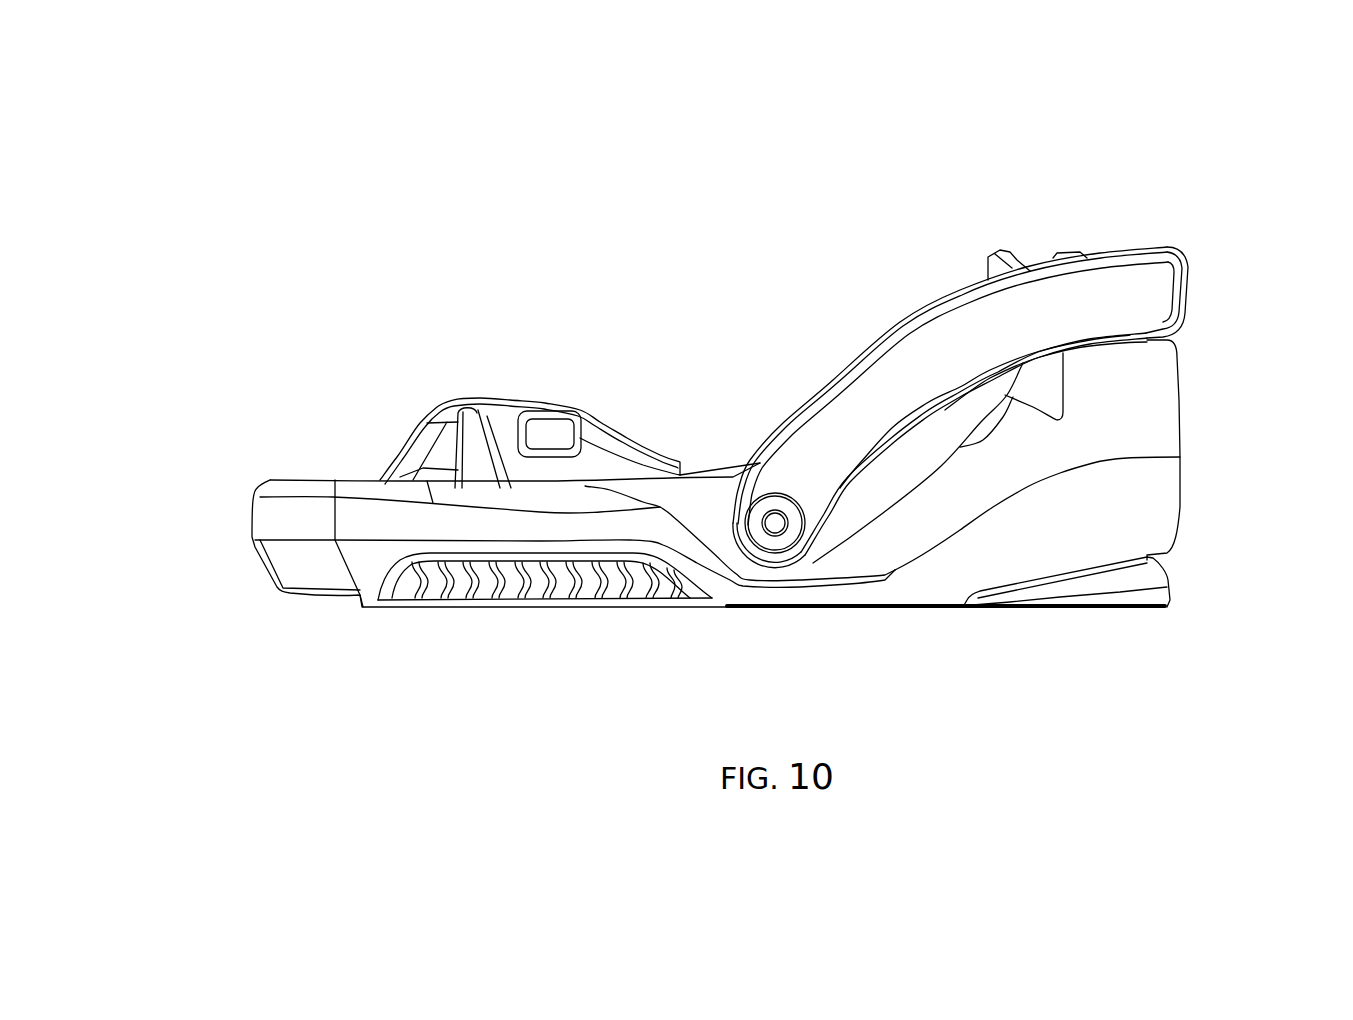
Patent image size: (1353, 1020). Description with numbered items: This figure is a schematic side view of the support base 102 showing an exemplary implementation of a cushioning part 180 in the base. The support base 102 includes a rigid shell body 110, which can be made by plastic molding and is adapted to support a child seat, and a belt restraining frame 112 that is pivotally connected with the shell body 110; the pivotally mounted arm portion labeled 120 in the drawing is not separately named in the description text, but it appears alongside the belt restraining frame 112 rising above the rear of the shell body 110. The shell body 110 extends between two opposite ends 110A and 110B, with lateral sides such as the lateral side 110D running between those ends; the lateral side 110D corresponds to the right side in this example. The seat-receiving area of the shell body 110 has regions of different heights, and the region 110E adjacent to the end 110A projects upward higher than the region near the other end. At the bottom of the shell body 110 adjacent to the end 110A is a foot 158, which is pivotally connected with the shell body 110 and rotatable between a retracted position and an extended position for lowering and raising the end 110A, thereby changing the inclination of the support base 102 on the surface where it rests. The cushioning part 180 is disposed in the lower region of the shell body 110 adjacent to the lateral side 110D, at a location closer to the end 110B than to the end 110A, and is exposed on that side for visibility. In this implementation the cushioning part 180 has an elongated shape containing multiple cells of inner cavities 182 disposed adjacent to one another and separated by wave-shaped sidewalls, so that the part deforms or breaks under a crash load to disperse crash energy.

The support base 102 is at (248, 99).
The shell body 110 is at (302, 486).
The end of the shell body 110A is at (1208, 505).
The end of the shell body 110B is at (222, 523).
The lateral side of the shell body 110D is at (475, 365).
The region of the shell body 110E is at (805, 320).
The belt restraining frame 112 is at (1203, 232).
The ankle strap arm 120 is at (913, 352).
The foot 158 is at (1117, 580).
The cushioning part 180 is at (648, 603).
The inner cavity 182 is at (538, 605).